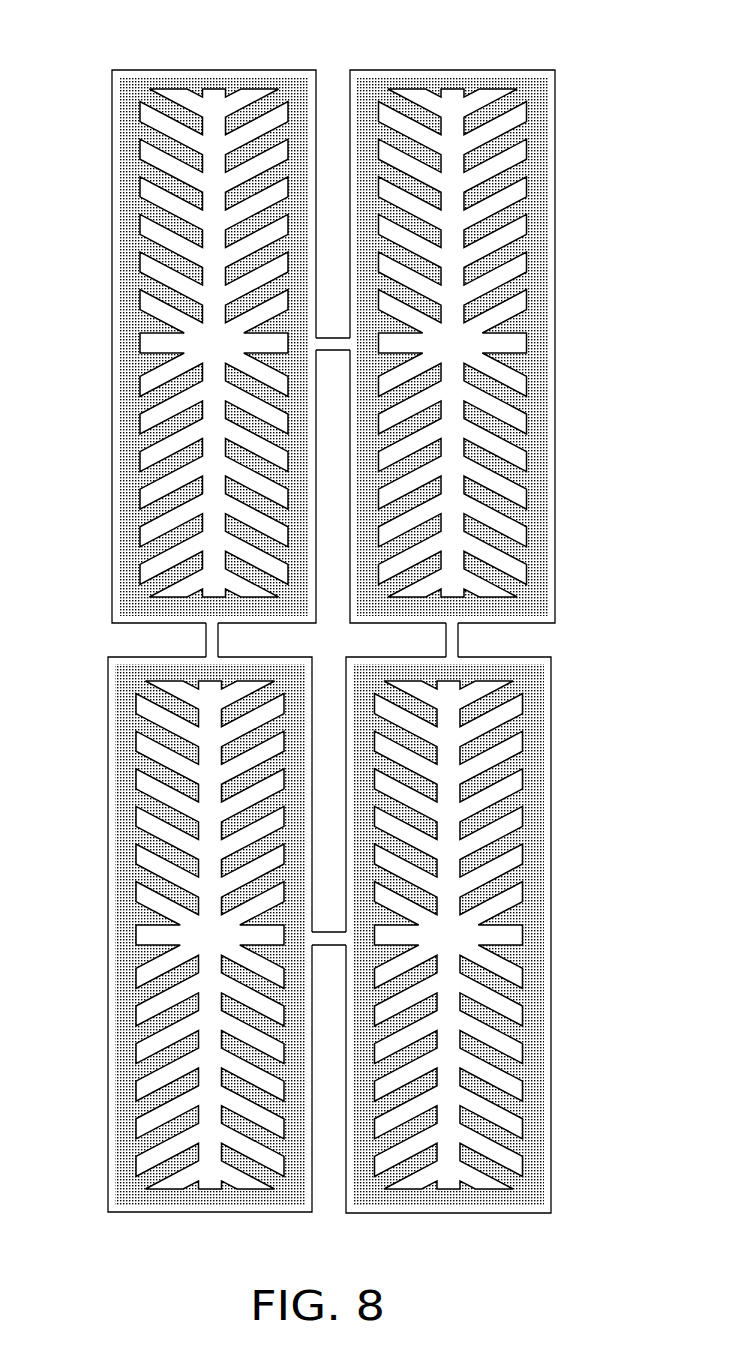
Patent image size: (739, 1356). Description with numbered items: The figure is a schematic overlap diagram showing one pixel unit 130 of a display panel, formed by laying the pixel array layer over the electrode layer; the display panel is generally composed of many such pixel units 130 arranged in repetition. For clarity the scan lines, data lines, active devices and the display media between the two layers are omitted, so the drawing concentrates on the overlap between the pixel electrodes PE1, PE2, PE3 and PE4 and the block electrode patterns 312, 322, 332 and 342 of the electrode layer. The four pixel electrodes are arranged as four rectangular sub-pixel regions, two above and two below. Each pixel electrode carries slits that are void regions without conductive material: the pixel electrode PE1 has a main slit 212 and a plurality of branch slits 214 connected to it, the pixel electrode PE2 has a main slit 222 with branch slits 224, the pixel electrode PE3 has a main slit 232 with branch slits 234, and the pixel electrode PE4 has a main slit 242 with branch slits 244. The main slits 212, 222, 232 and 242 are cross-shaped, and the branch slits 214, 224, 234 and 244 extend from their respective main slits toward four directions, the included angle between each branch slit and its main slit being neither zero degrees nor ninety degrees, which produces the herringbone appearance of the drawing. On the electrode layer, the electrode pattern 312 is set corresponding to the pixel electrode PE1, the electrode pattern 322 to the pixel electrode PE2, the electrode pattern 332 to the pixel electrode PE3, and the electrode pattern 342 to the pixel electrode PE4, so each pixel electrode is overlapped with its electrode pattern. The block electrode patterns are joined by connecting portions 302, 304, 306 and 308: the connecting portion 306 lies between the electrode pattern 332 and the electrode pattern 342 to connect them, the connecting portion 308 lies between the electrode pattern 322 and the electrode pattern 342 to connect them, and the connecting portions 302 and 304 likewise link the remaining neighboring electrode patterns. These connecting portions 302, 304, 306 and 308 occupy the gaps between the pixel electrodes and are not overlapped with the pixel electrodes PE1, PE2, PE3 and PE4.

The pixel unit 130 is at (620, 1258).
The pixel electrode PE1 is at (118, 184).
The pixel electrode PE2 is at (553, 185).
The pixel electrode PE3 is at (116, 836).
The pixel electrode PE4 is at (545, 851).
The main slit 212 is at (200, 347).
The branch slits 214 is at (148, 278).
The main slit 222 is at (466, 348).
The branch slits 224 is at (517, 278).
The main slit 232 is at (197, 942).
The branch slits 234 is at (149, 760).
The main slit 242 is at (461, 942).
The branch slits 244 is at (513, 760).
The connecting portion 302 is at (329, 337).
The connecting portion 304 is at (206, 637).
The connecting portion 306 is at (328, 947).
The connecting portion 308 is at (458, 637).
The electrode pattern 312 is at (214, 70).
The electrode pattern 322 is at (452, 70).
The electrode pattern 332 is at (195, 705).
The electrode pattern 342 is at (455, 707).